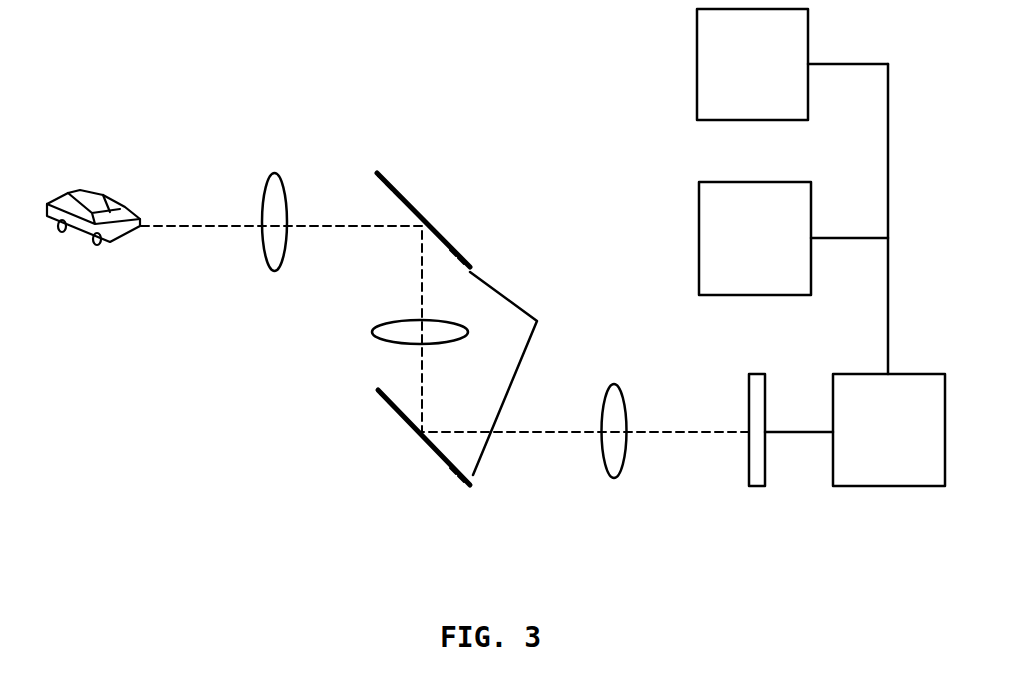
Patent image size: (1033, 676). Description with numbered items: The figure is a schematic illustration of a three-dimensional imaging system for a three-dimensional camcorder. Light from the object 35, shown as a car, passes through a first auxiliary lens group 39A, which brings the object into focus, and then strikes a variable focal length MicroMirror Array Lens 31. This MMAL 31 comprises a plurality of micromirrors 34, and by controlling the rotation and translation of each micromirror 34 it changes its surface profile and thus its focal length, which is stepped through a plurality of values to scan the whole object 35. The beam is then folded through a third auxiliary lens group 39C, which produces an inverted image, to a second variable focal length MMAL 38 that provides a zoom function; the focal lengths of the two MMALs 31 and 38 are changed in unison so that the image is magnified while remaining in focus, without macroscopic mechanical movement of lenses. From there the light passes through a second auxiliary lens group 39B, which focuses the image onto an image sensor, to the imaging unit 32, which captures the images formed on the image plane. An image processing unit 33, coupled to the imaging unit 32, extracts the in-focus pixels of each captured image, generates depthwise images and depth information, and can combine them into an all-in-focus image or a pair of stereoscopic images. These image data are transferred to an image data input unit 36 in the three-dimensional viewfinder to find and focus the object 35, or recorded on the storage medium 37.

The variable focal length MicroMirror Array Lens 31 is at (417, 205).
The imaging unit 32 is at (747, 470).
The image processing unit 33 is at (832, 470).
The micromirror 34 is at (524, 373).
The object 35 is at (95, 185).
The image data input unit 36 is at (697, 240).
The storage medium 37 is at (695, 69).
The second variable focal length MMAL 38 is at (417, 435).
The first auxiliary lens group 39A is at (279, 175).
The second auxiliary lens group 39B is at (605, 473).
The third auxiliary lens group 39C is at (367, 340).